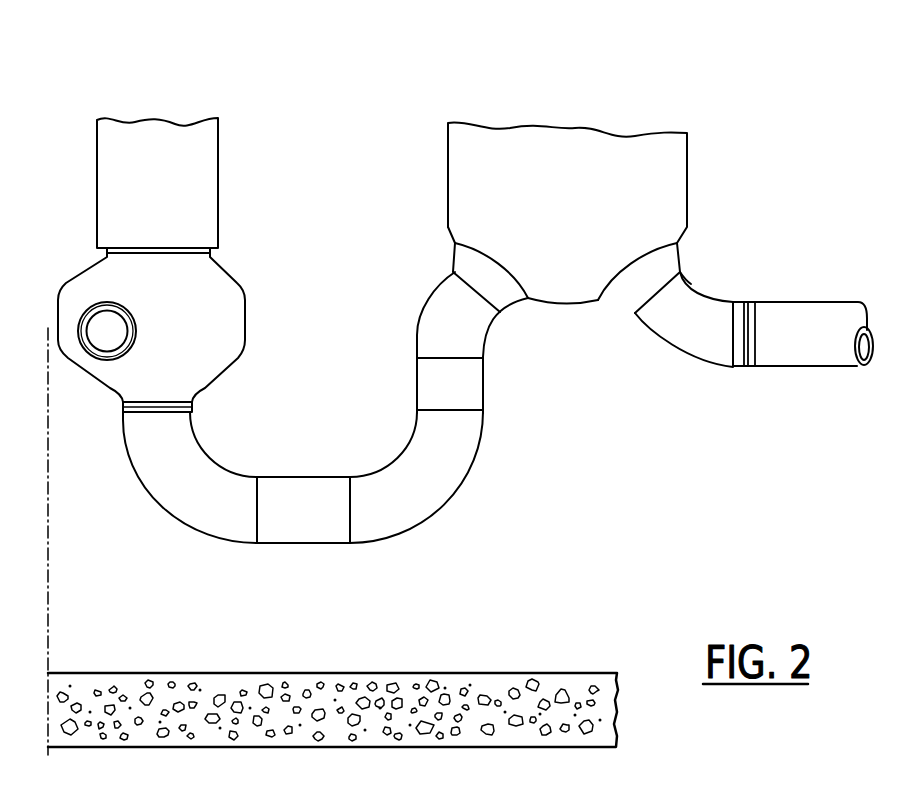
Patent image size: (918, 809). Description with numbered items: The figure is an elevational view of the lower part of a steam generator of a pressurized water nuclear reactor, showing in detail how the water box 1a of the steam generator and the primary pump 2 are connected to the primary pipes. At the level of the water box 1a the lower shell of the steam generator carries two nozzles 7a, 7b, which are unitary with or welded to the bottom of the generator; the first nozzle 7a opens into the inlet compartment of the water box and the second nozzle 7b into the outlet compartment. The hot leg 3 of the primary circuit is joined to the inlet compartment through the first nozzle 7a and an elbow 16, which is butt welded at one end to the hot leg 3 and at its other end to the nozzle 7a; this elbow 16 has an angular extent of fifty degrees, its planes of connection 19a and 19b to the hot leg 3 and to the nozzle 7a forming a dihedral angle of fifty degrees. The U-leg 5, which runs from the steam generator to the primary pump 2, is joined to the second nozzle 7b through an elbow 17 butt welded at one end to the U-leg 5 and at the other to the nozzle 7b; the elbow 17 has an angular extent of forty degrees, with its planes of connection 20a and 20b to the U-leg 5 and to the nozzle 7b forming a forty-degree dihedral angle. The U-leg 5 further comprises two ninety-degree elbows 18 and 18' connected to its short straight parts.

The lower part of the steam generator 1a is at (660, 212).
The primary pump 2 is at (200, 197).
The hot leg 3 is at (567, 182).
The U-leg 5 is at (413, 497).
The first nozzle 7a is at (622, 290).
The second nozzle 7b is at (508, 290).
The elbow 16 is at (699, 340).
The elbow 17 is at (473, 326).
The elbow 18 is at (393, 477).
The elbow 18' is at (190, 498).
The plane of connection 19a is at (754, 300).
The plane of connection 19b is at (670, 290).
The plane of connection 20a is at (437, 359).
The plane of connection 20b is at (466, 290).